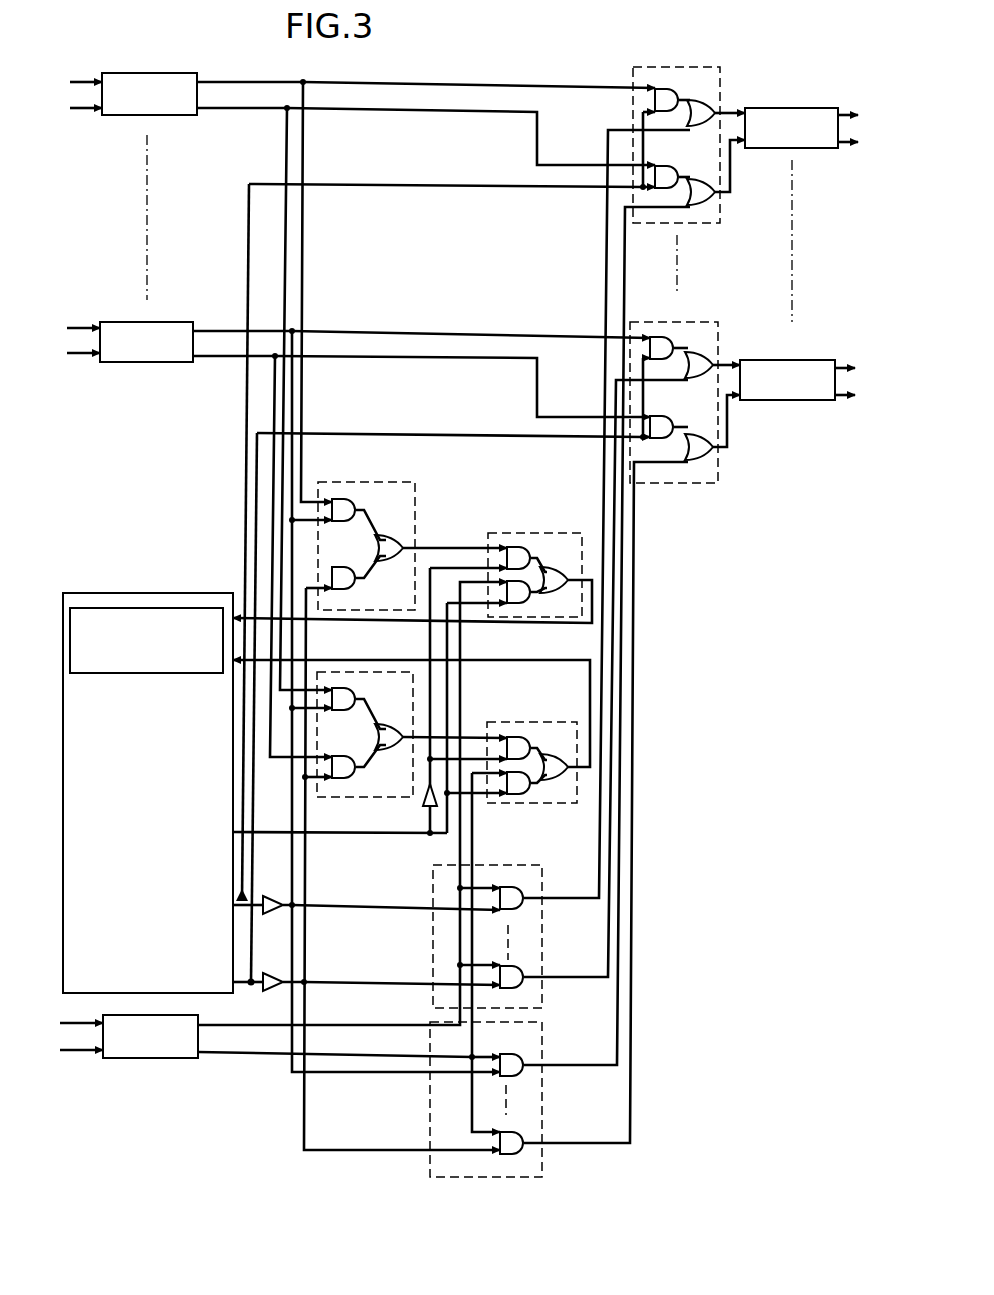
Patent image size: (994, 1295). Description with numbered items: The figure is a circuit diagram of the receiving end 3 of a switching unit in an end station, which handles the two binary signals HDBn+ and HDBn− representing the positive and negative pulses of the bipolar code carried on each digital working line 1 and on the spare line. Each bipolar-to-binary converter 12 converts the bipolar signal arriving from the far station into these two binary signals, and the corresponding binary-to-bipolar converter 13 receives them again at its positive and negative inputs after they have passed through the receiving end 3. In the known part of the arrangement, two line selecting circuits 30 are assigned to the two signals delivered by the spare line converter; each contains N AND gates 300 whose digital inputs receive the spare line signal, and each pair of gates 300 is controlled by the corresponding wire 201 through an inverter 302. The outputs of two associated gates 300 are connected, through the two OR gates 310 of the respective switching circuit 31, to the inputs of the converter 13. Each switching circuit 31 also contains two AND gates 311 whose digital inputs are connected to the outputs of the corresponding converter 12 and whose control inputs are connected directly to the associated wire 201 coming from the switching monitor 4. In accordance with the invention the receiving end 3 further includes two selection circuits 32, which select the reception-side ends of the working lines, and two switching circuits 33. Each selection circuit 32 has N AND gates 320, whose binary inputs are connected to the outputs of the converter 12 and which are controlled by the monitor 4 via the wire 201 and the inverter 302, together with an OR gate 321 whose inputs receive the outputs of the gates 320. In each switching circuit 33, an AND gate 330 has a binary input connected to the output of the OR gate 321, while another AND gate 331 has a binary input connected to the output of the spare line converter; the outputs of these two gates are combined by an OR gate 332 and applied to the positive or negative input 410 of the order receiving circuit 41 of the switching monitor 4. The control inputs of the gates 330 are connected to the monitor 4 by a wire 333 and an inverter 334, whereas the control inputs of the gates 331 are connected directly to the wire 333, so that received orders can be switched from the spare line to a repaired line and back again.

The digital working line 1 is at (94, 82).
The receiving end of the switching unit 3 is at (684, 864).
The switching monitor 4 is at (145, 591).
The bipolar-to-binary converter 12 is at (197, 75).
The binary-to-bipolar converter 13 is at (742, 108).
The line selecting circuit 30 is at (412, 1112).
The switching circuit 31 is at (678, 497).
The selection circuit 32 is at (365, 482).
The switching circuit 33 is at (487, 724).
The order receiving circuit 41 is at (138, 674).
The wire 201 is at (245, 997).
The AND gate 300 is at (528, 891).
The inverter 302 is at (274, 976).
The OR gate 310 is at (702, 100).
The AND gate 311 is at (658, 418).
The AND gate 320 is at (363, 642).
The OR gate 321 is at (372, 748).
The AND gate 330 is at (514, 736).
The AND gate 331 is at (505, 820).
The OR gate 332 is at (556, 562).
The wire 333 is at (273, 828).
The inverter 334 is at (425, 805).
The input of the order receiving circuit 410 is at (222, 683).